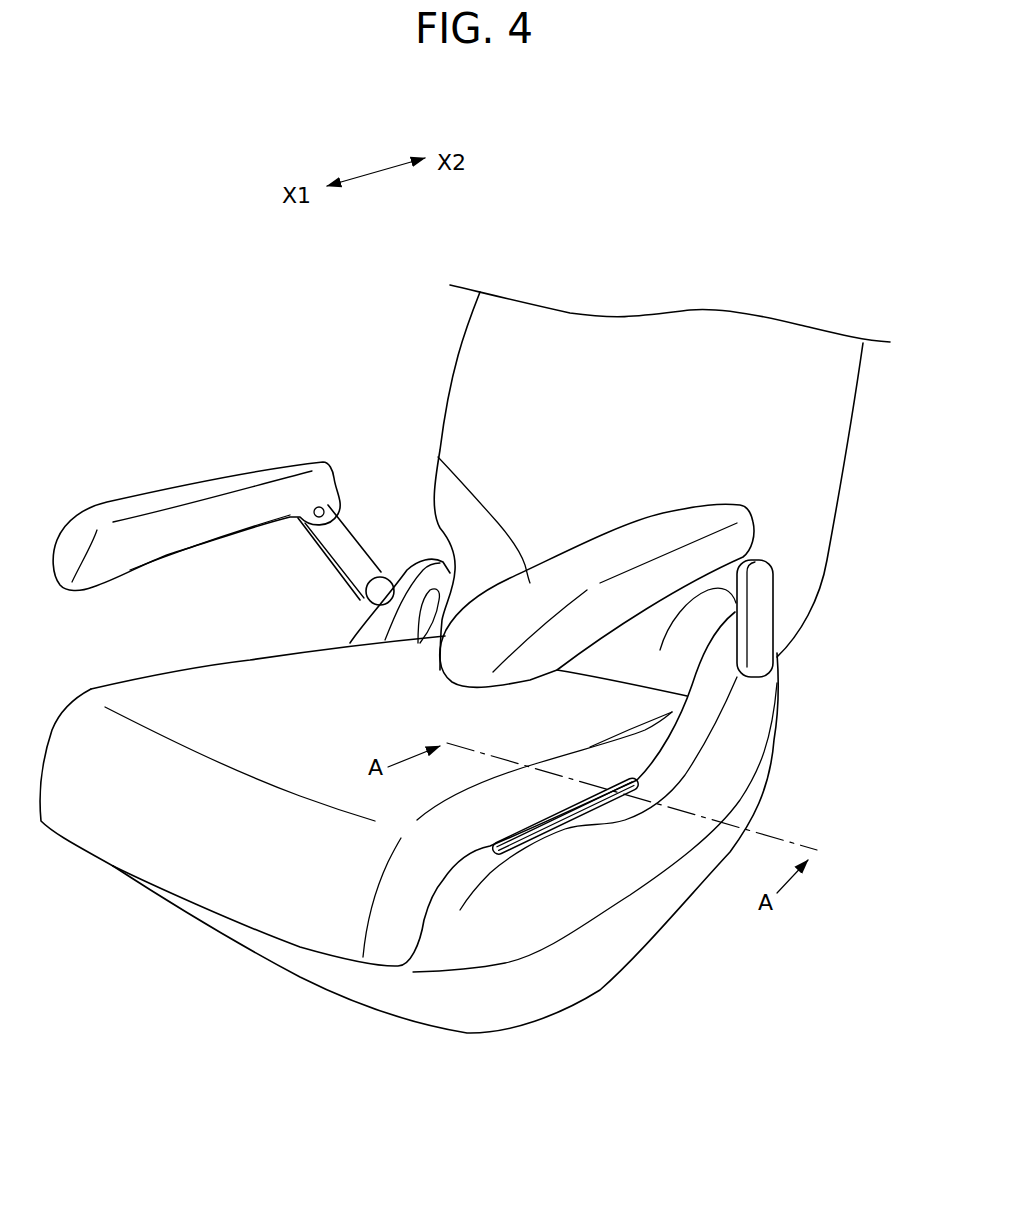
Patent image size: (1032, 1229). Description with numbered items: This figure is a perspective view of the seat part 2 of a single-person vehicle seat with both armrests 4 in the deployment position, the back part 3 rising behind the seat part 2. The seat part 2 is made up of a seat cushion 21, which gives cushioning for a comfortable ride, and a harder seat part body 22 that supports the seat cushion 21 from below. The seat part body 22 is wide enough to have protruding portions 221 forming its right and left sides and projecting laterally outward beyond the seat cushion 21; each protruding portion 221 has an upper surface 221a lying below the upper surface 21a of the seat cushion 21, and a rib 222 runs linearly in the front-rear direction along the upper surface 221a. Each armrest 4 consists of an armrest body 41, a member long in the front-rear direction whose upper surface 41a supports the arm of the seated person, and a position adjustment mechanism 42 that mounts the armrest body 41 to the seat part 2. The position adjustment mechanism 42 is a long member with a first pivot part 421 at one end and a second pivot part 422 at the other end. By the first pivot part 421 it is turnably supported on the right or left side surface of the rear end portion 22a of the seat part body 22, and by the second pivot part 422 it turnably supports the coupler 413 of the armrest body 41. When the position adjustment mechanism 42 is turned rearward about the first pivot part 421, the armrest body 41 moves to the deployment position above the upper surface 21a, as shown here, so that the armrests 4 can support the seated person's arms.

The seat part 2 is at (134, 927).
The back part 3 is at (818, 458).
The armrest 4 is at (343, 381).
The seat cushion 21 is at (256, 895).
The upper surface of the seat cushion 21a is at (177, 690).
The seat part body 22 is at (324, 970).
The rear end portion of the seat part body 22a is at (757, 709).
The armrest body 41 is at (262, 470).
The upper surface of the armrest body 41a is at (112, 512).
The coupler 413 is at (686, 635).
The position adjustment mechanism 42 is at (345, 500).
The first pivot part 421 is at (358, 602).
The second pivot part 422 is at (306, 516).
The protruding portion 221 is at (522, 943).
The upper surface of the protruding portion 221a is at (605, 825).
The rib 222 is at (542, 838).